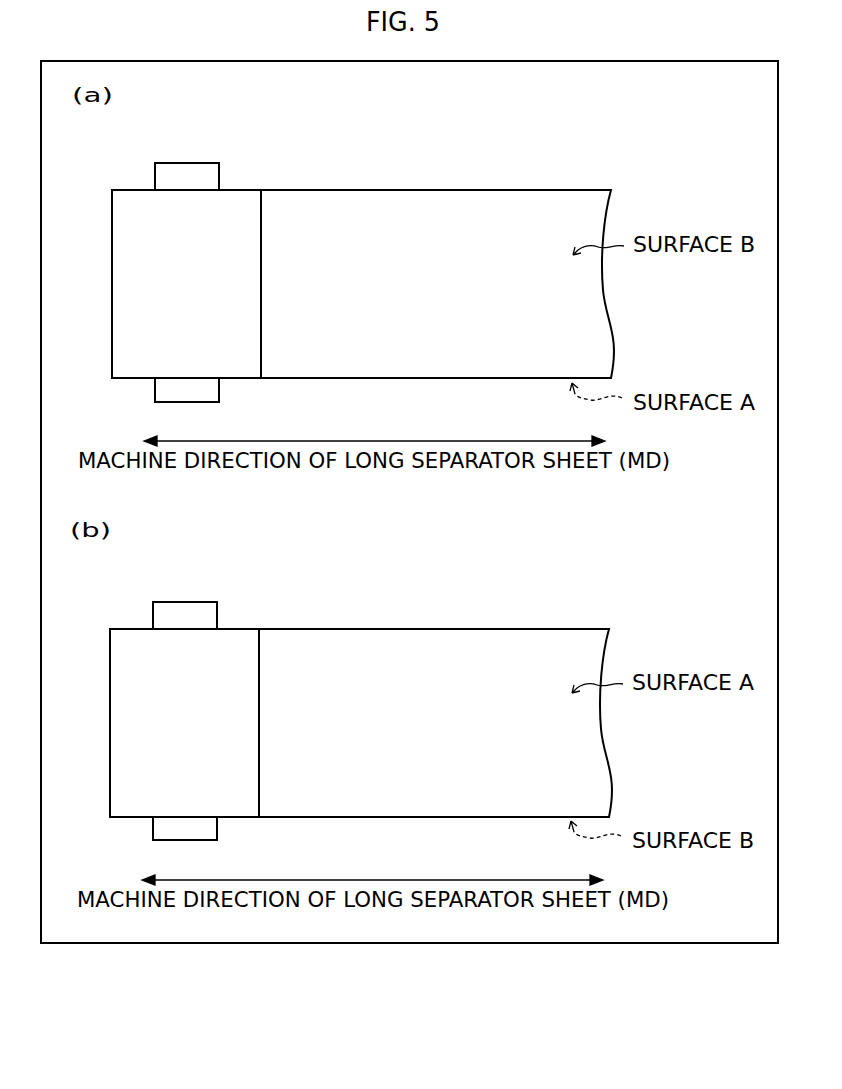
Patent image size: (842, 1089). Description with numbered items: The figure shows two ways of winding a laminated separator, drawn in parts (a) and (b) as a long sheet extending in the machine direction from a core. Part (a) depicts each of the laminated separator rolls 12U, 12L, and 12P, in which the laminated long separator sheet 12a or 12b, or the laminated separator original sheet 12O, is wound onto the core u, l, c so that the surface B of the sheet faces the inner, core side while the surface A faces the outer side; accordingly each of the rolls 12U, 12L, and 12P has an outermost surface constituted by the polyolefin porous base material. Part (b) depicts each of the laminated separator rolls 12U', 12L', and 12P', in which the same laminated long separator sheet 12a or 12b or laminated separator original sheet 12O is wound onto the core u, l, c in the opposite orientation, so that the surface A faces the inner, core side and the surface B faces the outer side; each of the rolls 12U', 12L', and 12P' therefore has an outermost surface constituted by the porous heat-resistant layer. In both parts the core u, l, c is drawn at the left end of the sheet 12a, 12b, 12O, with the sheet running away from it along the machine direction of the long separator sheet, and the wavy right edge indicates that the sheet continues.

The laminated separator roll 12U is at (438, 251).
The laminated separator roll 12L is at (438, 251).
The laminated separator roll 12P is at (438, 251).
The laminated separator roll 12U' is at (437, 689).
The laminated separator roll 12L' is at (437, 689).
The laminated separator roll 12P' is at (437, 689).
The laminated long separator sheet 12a is at (513, 284).
The laminated long separator sheet 12b is at (513, 284).
The laminated separator original sheet 12O is at (606, 310).
The core u is at (187, 261).
The core l is at (187, 261).
The core c is at (185, 168).